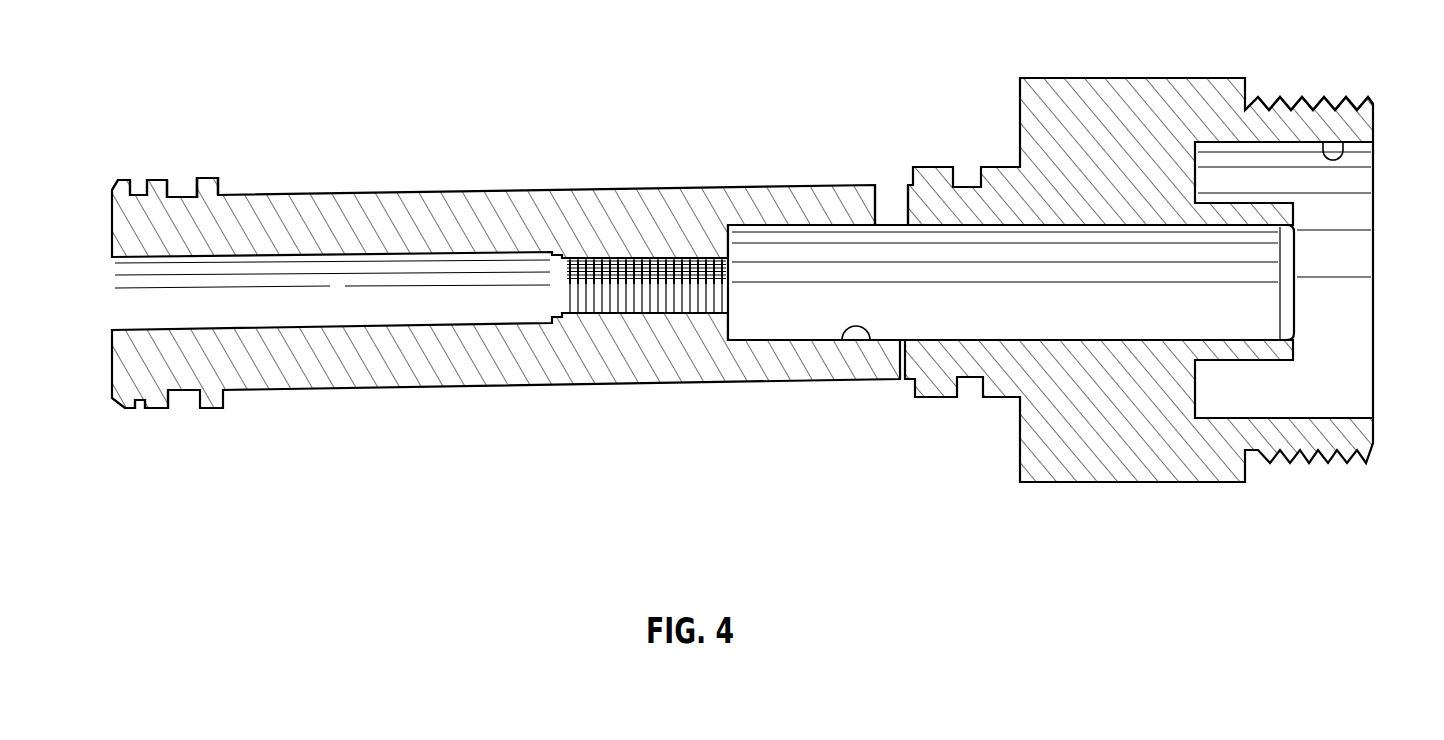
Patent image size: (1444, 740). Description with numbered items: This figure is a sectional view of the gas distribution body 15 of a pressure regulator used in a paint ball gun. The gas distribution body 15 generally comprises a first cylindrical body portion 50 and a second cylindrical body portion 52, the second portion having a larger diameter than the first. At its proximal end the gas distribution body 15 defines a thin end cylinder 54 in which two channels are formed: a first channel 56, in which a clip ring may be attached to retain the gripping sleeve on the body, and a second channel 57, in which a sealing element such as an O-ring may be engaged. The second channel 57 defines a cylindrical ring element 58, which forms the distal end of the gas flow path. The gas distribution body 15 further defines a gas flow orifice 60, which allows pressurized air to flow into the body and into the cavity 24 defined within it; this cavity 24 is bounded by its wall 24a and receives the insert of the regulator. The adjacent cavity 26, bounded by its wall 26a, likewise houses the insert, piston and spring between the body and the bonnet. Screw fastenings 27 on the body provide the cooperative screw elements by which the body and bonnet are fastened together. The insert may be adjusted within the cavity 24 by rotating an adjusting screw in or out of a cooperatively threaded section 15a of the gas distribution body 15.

The gas distribution body 15 is at (597, 207).
The cooperatively threaded section 15a is at (648, 253).
The cavity 24 is at (783, 317).
The wall 24a is at (870, 340).
The cavity 26 is at (1360, 158).
The wall 26a is at (1344, 158).
The screw fastenings 27 is at (1284, 97).
The first cylindrical body portion 50 is at (398, 192).
The second cylindrical body portion 52 is at (1098, 108).
The thin end cylinder 54 is at (218, 122).
The first channel 56 is at (142, 409).
The second channel 57 is at (183, 196).
The cylindrical ring element 58 is at (217, 179).
The gas flow orifice 60 is at (890, 191).